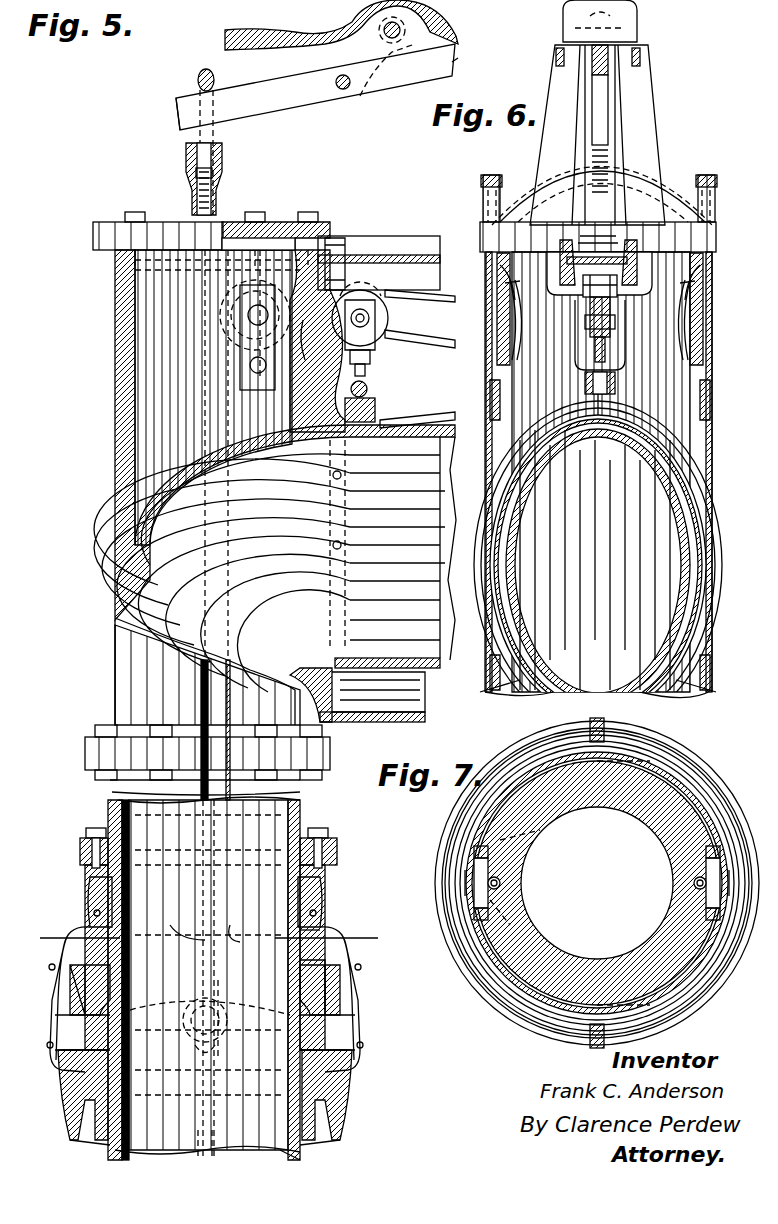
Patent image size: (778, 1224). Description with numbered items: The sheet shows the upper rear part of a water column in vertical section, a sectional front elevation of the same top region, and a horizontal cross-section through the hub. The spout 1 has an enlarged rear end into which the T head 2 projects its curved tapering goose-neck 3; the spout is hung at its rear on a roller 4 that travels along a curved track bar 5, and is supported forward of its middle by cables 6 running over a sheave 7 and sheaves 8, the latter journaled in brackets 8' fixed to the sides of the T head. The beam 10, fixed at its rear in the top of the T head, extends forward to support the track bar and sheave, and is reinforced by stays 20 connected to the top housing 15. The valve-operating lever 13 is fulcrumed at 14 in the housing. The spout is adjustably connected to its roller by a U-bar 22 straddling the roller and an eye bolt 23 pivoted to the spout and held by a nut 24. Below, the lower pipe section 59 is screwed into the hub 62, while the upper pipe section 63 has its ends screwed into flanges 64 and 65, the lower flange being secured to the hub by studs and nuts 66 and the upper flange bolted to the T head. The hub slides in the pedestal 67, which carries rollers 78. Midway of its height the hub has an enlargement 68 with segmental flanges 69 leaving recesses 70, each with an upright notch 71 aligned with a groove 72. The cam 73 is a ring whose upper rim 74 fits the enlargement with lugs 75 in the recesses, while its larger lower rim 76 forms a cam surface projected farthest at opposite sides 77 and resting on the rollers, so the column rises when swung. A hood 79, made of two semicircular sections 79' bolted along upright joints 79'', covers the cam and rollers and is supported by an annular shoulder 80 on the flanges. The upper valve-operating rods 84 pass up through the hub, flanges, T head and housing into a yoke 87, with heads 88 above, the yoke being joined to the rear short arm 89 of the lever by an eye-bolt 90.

In FIG. 5, the spout 1 is at (404, 426).
In FIG. 6, the spout 1 is at (716, 606).
In FIG. 5, the T head 2 is at (115, 560).
In FIG. 6, the T head 2 is at (714, 250).
In FIG. 5, the goose-neck 3 is at (425, 622).
In FIG. 6, the goose-neck 3 is at (584, 642).
In FIG. 5, the roller 4 is at (390, 318).
In FIG. 6, the roller 4 is at (612, 292).
In FIG. 5, the track bar 5 is at (420, 348).
In FIG. 6, the track bar 5 is at (592, 350).
In FIG. 5, the cables 6 is at (232, 796).
In FIG. 6, the cables 6 is at (500, 290).
In FIG. 5, the sheave 7 is at (209, 940).
In FIG. 5, the sheaves 8 is at (307, 338).
In FIG. 6, the sheaves 8 is at (591, 309).
In FIG. 5, the brackets 8' is at (307, 350).
In FIG. 6, the brackets 8' is at (594, 286).
In FIG. 5, the beam 10 is at (376, 236).
In FIG. 6, the beam 10 is at (592, 228).
In FIG. 5, the valve-operating lever 13 is at (378, 90).
In FIG. 6, the valve-operating lever 13 is at (609, 135).
In FIG. 5, the fulcrum 14 is at (336, 84).
In FIG. 6, the fulcrum 14 is at (610, 80).
In FIG. 5, the top housing 15 is at (305, 37).
In FIG. 6, the top housing 15 is at (640, 100).
In FIG. 5, the stays 20 is at (456, 60).
In FIG. 6, the stays 20 is at (556, 58).
In FIG. 5, the U-bar 22 is at (372, 354).
In FIG. 6, the U-bar 22 is at (616, 354).
In FIG. 5, the eye bolt 23 is at (367, 370).
In FIG. 6, the eye bolt 23 is at (598, 430).
In FIG. 5, the nut 24 is at (350, 380).
In FIG. 6, the nut 24 is at (590, 376).
In FIG. 5, the lower pipe section 59 is at (284, 1150).
In FIG. 7, the lower pipe section 59 is at (566, 808).
In FIG. 5, the hub 62 is at (298, 1036).
In FIG. 7, the hub 62 is at (690, 802).
In FIG. 5, the upper pipe section 63 is at (128, 787).
In FIG. 5, the upper flange 64 is at (85, 757).
In FIG. 7, the upper flange 64 is at (632, 966).
In FIG. 5, the lower flange 65 is at (88, 836).
In FIG. 5, the studs and nuts 66 is at (80, 858).
In FIG. 5, the pedestal 67 is at (84, 1082).
In FIG. 7, the pedestal 67 is at (470, 818).
In FIG. 5, the enlargement 68 is at (96, 966).
In FIG. 7, the enlargement 68 is at (500, 842).
In FIG. 5, the segmental flanges 69 is at (88, 930).
In FIG. 7, the segmental flanges 69 is at (660, 792).
In FIG. 5, the recesses 70 is at (232, 936).
In FIG. 7, the recesses 70 is at (478, 866).
In FIG. 5, the notch 71 is at (222, 1012).
In FIG. 7, the notch 71 is at (508, 880).
In FIG. 5, the groove 72 is at (215, 1145).
In FIG. 5, the cam 73 is at (340, 1010).
In FIG. 7, the cam 73 is at (502, 976).
In FIG. 5, the upper rim 74 is at (312, 940).
In FIG. 5, the lugs 75 is at (188, 932).
In FIG. 7, the lugs 75 is at (692, 866).
In FIG. 5, the lower rim 76 is at (84, 1016).
In FIG. 7, the lower rim 76 is at (486, 944).
In FIG. 5, the farthest downwardly projected sides 77 is at (76, 1018).
In FIG. 5, the rollers 78 is at (212, 1060).
In FIG. 7, the rollers 78 is at (738, 898).
In FIG. 5, the hood 79 is at (33, 1002).
In FIG. 7, the hood 79 is at (603, 883).
In FIG. 5, the semicircular sections 79' is at (375, 988).
In FIG. 7, the semicircular sections 79' is at (597, 873).
In FIG. 5, the upright joints 79'' is at (386, 1038).
In FIG. 7, the upright joints 79'' is at (576, 877).
In FIG. 5, the annular shoulder 80 is at (92, 918).
In FIG. 5, the upper valve-operating rods 84 is at (200, 420).
In FIG. 6, the upper valve-operating rods 84 is at (488, 206).
In FIG. 5, the upper valve-operating yoke 87 is at (192, 184).
In FIG. 6, the upper valve-operating yoke 87 is at (656, 176).
In FIG. 5, the heads 88 is at (214, 178).
In FIG. 6, the heads 88 is at (488, 176).
In FIG. 5, the rear short arm 89 is at (180, 116).
In FIG. 6, the rear short arm 89 is at (590, 116).
In FIG. 5, the eye-bolt 90 is at (198, 80).
In FIG. 6, the eye-bolt 90 is at (590, 138).